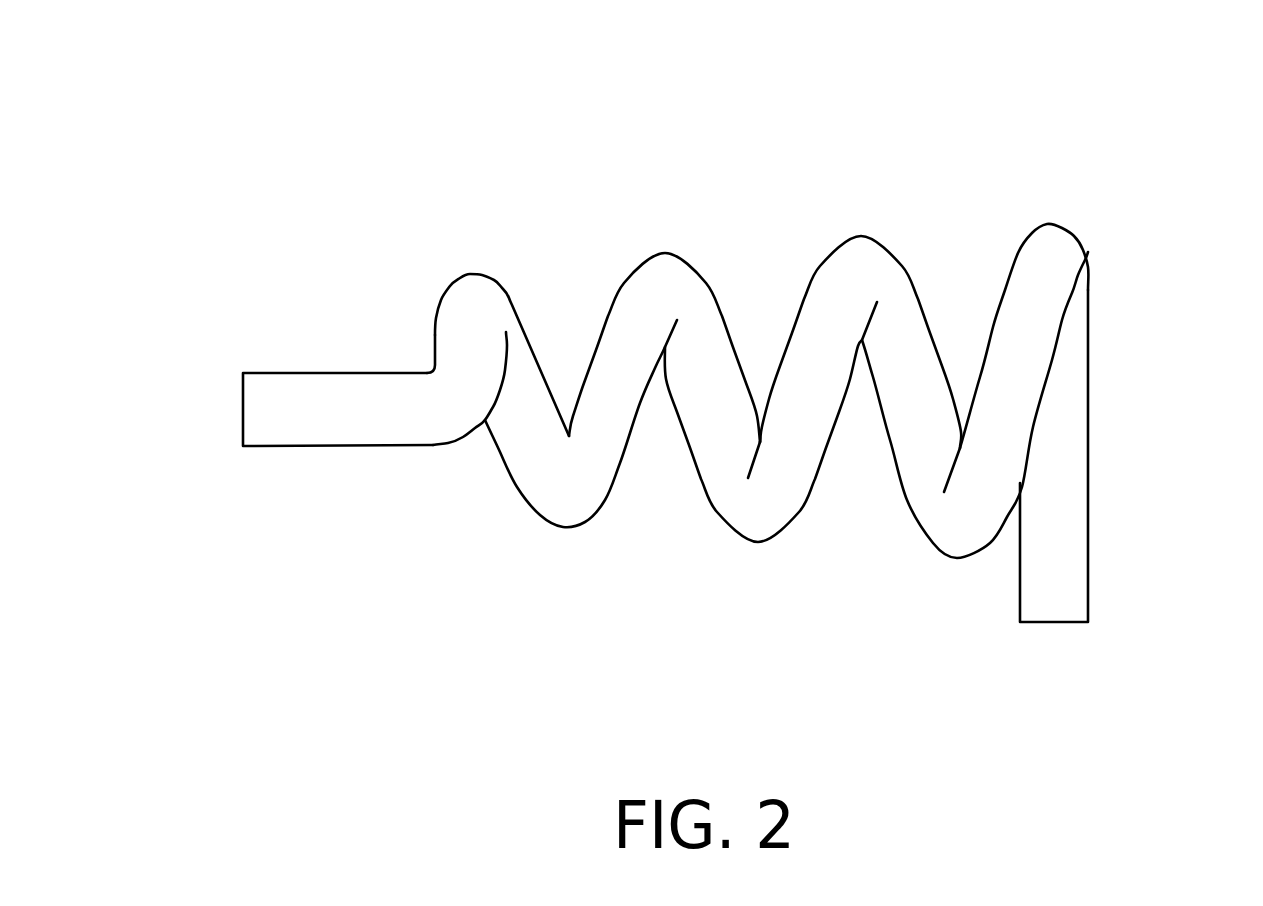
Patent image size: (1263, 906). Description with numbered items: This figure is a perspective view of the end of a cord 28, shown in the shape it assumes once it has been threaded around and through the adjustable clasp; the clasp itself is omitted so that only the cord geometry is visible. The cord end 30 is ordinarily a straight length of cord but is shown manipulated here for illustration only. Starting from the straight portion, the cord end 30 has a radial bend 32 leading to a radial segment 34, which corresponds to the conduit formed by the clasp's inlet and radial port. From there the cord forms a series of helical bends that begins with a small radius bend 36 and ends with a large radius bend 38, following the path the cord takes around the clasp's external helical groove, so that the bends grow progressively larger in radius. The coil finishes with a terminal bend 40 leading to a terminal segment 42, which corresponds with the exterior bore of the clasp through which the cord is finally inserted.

The cord 28 is at (794, 217).
The cord end 30 is at (340, 411).
The radial bend 32 is at (459, 442).
The radial segment 34 is at (445, 340).
The small radius bend 36 is at (477, 275).
The large radius bend 38 is at (955, 558).
The terminal bend 40 is at (1062, 223).
The terminal segment 42 is at (1073, 524).